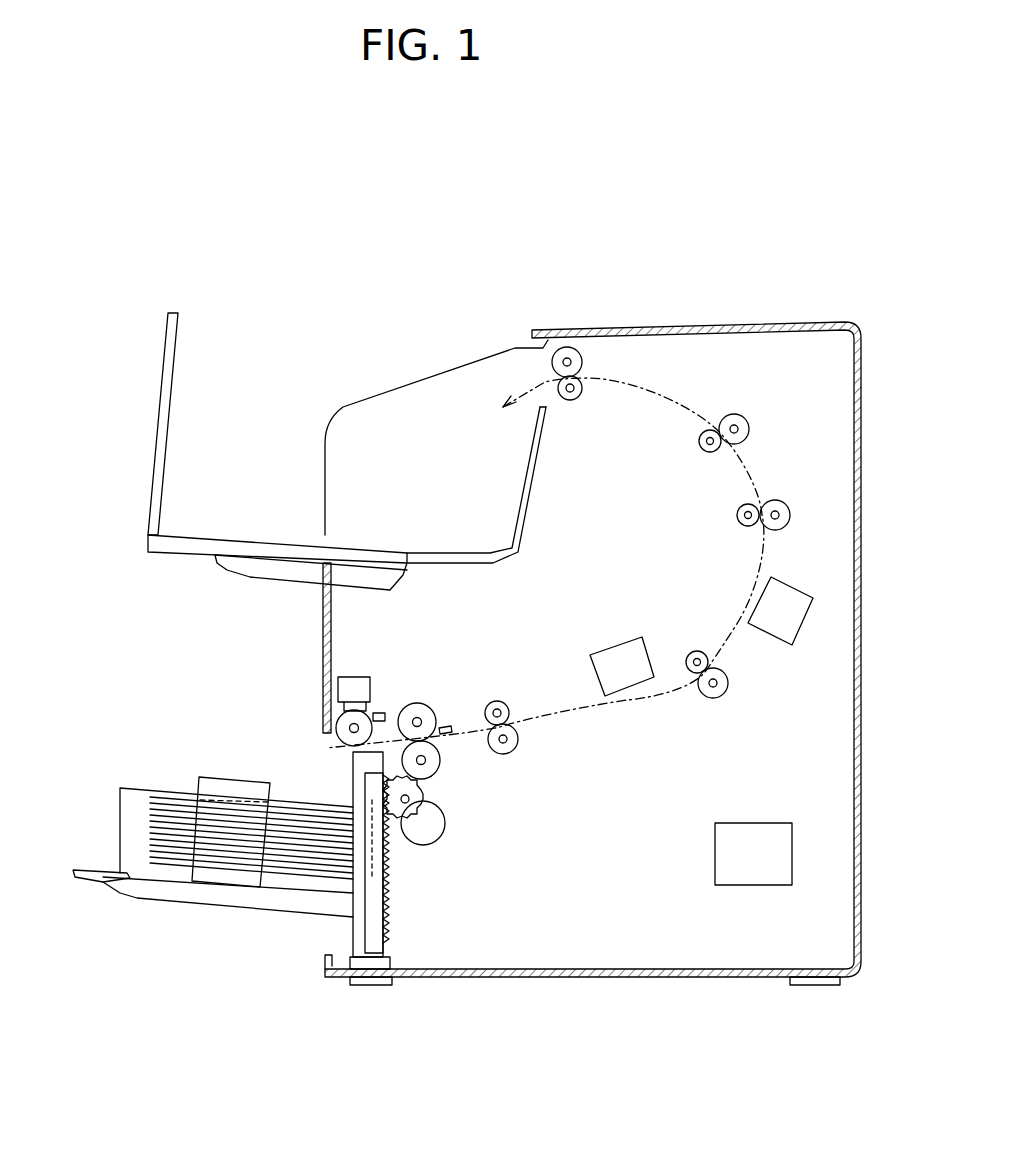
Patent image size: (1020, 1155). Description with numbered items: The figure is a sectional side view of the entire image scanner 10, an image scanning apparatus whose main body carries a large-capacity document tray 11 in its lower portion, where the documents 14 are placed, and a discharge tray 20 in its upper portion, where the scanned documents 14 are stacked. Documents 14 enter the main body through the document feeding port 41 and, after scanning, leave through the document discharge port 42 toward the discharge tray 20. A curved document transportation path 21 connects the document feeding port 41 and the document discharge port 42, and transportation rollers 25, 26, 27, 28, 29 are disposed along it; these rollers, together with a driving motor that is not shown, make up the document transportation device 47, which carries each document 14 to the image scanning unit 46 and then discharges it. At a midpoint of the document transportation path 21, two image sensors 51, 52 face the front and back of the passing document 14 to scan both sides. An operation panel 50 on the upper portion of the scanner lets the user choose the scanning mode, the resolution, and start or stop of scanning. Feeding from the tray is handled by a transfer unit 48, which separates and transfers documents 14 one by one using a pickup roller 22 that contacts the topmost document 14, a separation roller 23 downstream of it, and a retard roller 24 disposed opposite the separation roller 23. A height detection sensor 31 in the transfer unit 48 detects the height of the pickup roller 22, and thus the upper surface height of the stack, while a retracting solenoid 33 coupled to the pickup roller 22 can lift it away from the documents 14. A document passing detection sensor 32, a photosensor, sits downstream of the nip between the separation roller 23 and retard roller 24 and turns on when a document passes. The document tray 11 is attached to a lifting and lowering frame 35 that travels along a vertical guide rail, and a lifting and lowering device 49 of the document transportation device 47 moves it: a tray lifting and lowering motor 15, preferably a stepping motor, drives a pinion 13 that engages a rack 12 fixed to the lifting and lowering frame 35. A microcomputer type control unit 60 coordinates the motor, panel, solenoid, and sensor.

The image scanner 10 is at (726, 240).
The document tray 11 is at (140, 913).
The rack 12 is at (385, 931).
The pinion 13 is at (426, 826).
The documents 14 is at (290, 870).
The tray lifting and lowering motor 15 is at (418, 812).
The discharge tray 20 is at (245, 287).
The document transportation path 21 is at (677, 403).
The pickup roller 22 is at (340, 722).
The separation roller 23 is at (417, 703).
The retard roller 24 is at (440, 765).
The transportation roller 25 is at (520, 737).
The transportation roller 26 is at (722, 690).
The transportation roller 27 is at (791, 511).
The transportation roller 28 is at (748, 425).
The transportation roller 29 is at (583, 362).
The height detection sensor 31 is at (379, 713).
The document passing detection sensor 32 is at (452, 727).
The retracting solenoid 33 is at (340, 680).
The lifting and lowering frame 35 is at (353, 930).
The document feeding port 41 is at (322, 750).
The document discharge port 42 is at (525, 372).
The image scanning unit 46 is at (642, 556).
The document transportation device 47 is at (667, 955).
The transfer unit 48 is at (315, 675).
The lifting and lowering device 49 is at (552, 868).
The operation panel 50 is at (595, 325).
The image sensor 51 is at (612, 660).
The image sensor 52 is at (795, 622).
The control unit 60 is at (755, 870).